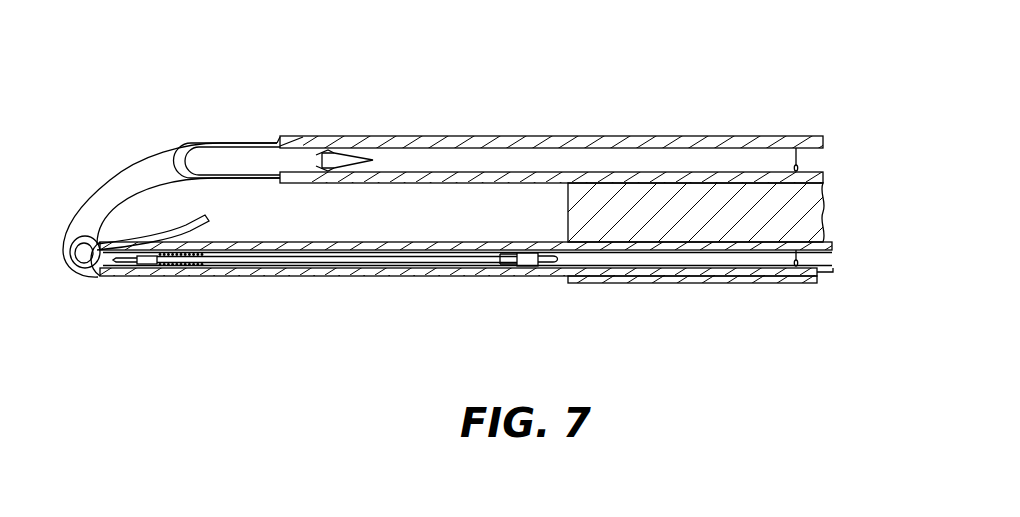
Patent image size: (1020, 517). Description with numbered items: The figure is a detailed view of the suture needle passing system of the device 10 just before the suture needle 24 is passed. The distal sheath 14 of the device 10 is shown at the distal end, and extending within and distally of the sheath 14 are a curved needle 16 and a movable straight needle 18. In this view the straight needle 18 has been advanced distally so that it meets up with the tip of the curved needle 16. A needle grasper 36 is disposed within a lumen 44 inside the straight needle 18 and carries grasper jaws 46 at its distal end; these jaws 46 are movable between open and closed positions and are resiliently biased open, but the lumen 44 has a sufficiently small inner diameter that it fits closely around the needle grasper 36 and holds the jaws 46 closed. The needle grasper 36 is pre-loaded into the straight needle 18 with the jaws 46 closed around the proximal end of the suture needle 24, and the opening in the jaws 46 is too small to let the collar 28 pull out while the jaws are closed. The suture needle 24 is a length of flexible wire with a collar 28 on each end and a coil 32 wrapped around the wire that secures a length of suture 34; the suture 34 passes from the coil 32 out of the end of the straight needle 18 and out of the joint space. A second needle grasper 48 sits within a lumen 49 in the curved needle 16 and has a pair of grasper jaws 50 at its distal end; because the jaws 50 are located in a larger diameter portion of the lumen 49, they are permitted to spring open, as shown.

The device 10 is at (714, 112).
The distal sheath 14 is at (568, 217).
The curved needle 16 is at (122, 163).
The straight needle 18 is at (360, 277).
The suture needle 24 is at (283, 269).
The collar 28 is at (143, 262).
The coil 32 is at (167, 266).
The suture 34 is at (189, 217).
The needle grasper 36 is at (683, 268).
The lumen 44 is at (820, 271).
The grasper jaws 46 is at (512, 267).
The second needle grasper 48 is at (452, 152).
The lumen 49 is at (287, 146).
The grasper jaws 50 is at (318, 153).